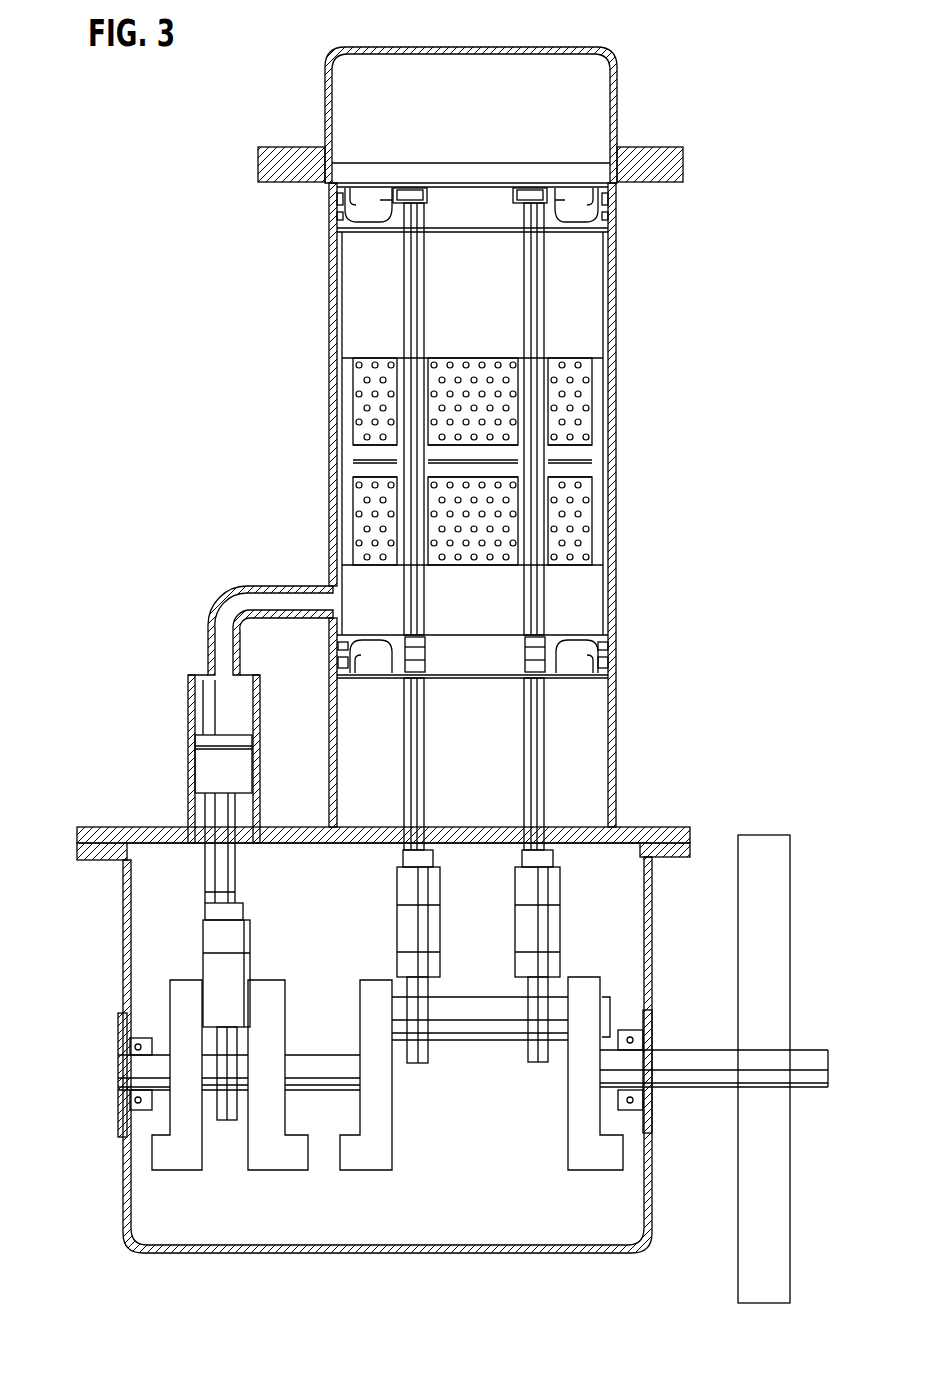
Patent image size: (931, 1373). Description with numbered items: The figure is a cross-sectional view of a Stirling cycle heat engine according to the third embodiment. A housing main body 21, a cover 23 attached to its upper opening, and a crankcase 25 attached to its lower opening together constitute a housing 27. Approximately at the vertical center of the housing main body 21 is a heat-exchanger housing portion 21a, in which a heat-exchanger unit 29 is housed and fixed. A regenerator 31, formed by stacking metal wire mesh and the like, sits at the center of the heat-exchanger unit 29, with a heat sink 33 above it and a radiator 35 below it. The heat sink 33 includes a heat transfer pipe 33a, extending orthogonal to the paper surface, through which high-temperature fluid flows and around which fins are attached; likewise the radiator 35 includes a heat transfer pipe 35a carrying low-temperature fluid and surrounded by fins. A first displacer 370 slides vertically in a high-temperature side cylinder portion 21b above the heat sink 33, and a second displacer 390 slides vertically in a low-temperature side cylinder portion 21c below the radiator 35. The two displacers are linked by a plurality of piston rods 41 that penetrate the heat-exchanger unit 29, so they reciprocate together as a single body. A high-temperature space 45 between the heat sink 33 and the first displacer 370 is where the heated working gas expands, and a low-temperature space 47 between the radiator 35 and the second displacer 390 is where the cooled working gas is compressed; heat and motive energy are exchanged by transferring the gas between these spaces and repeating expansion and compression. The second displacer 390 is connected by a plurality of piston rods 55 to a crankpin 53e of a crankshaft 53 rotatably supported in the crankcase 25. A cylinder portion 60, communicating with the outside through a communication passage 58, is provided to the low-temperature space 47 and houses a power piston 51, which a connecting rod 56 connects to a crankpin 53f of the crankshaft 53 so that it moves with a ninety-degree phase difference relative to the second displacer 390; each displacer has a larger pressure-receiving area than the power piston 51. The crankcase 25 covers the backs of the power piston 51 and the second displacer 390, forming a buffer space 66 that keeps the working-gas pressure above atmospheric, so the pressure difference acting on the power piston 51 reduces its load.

The cover 23 is at (447, 46).
The crankcase 25 is at (372, 1255).
The housing 27 is at (620, 240).
The heat-exchanger unit 29 is at (404, 435).
The regenerator 31 is at (355, 452).
The heat sink 33 is at (355, 382).
The heat transfer pipe 33a is at (353, 357).
The radiator 35 is at (355, 502).
The heat transfer pipe 35a is at (416, 553).
The housing main body 21 is at (555, 433).
The heat-exchanger housing portion 21a is at (616, 443).
The high-temperature side cylinder portion 21b is at (616, 310).
The low-temperature side cylinder portion 21c is at (531, 560).
The piston rods 41 is at (422, 278).
The high-temperature space 45 is at (600, 292).
The low-temperature space 47 is at (603, 577).
The first displacer 370 is at (365, 230).
The second displacer 390 is at (575, 678).
The piston rods 55 is at (424, 723).
The communication passage 58 is at (222, 592).
The cylinder portion 60 is at (188, 736).
The power piston 51 is at (205, 766).
The connecting rod 56 is at (206, 868).
The crankshaft 53 is at (473, 1078).
The crankpin 53e is at (483, 1040).
The crankpin 53f is at (208, 1088).
The buffer space 66 is at (485, 1205).